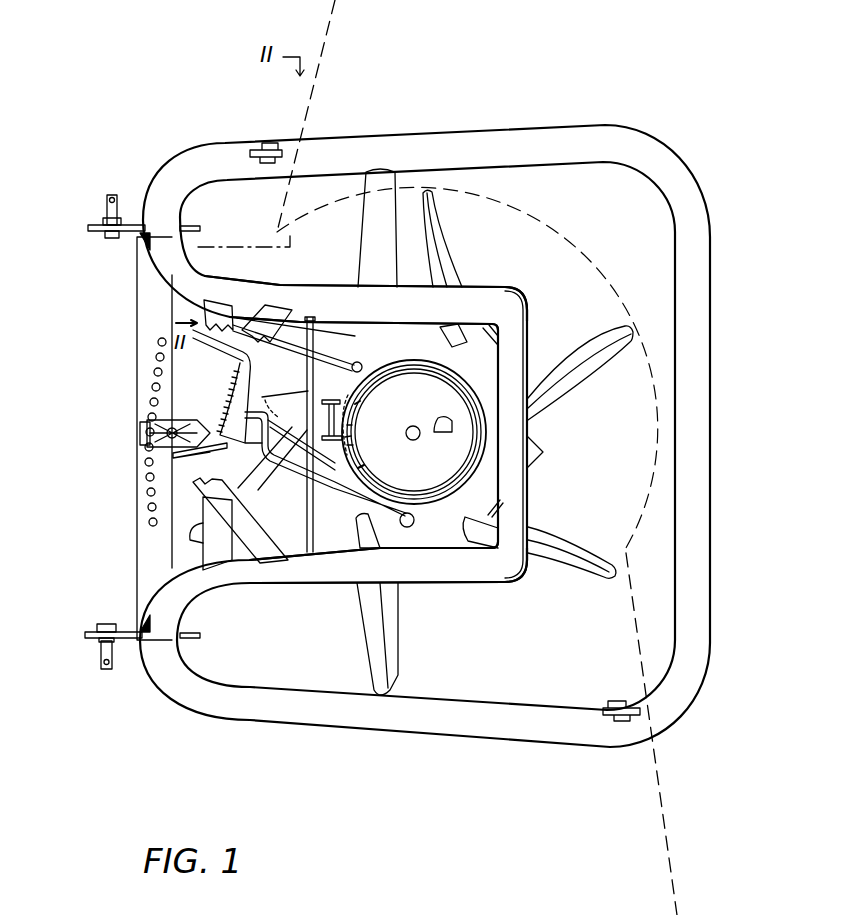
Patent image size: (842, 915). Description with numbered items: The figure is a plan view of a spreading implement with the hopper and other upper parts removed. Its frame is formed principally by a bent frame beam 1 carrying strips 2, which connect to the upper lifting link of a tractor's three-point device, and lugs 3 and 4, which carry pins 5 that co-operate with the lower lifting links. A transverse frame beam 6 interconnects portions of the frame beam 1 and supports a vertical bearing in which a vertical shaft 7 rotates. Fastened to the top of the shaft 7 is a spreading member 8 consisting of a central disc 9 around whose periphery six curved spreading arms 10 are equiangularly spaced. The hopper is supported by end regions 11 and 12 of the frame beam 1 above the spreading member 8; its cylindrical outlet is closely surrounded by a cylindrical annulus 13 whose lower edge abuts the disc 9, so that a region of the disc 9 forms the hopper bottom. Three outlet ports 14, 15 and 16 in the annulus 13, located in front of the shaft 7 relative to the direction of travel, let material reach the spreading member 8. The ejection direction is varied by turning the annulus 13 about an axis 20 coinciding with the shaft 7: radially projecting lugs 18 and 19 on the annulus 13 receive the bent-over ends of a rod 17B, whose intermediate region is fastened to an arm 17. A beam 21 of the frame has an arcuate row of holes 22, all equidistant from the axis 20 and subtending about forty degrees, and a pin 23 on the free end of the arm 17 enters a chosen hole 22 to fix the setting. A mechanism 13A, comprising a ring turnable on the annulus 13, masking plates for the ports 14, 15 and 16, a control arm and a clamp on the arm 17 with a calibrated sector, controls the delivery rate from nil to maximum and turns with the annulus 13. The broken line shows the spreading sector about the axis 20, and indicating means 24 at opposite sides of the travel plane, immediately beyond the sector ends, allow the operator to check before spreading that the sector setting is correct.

The bent frame beam 1 is at (550, 126).
The strips 2 is at (258, 530).
The lug 3 is at (105, 233).
The lug 4 is at (104, 631).
The pins 5 is at (118, 207).
The transverse frame beam 6 is at (362, 648).
The vertical shaft 7 is at (416, 441).
The spreading member 8 is at (590, 350).
The central disc 9 is at (542, 447).
The curved spreading arms 10 is at (548, 537).
The end region of frame beam 11 is at (497, 292).
The end region of frame beam 12 is at (452, 584).
The cylindrical annulus 13 is at (456, 386).
The mechanism 13A is at (446, 491).
The outlet port 14 is at (363, 401).
The outlet port 15 is at (353, 437).
The outlet port 16 is at (367, 472).
The arm 17 is at (258, 437).
The rod 17B is at (300, 395).
The radially projecting lug 18 is at (362, 364).
The radially projecting lug 19 is at (415, 520).
The axis 20 is at (421, 428).
The beam 21 is at (137, 360).
The holes 22 is at (147, 497).
The pin 23 is at (140, 436).
The indicating means 24 is at (254, 147).